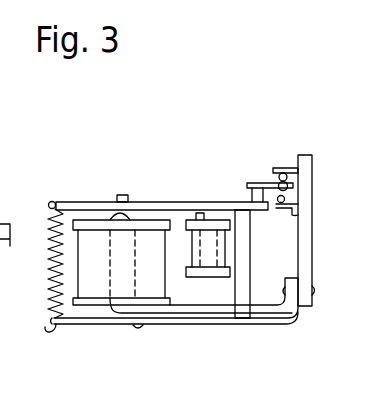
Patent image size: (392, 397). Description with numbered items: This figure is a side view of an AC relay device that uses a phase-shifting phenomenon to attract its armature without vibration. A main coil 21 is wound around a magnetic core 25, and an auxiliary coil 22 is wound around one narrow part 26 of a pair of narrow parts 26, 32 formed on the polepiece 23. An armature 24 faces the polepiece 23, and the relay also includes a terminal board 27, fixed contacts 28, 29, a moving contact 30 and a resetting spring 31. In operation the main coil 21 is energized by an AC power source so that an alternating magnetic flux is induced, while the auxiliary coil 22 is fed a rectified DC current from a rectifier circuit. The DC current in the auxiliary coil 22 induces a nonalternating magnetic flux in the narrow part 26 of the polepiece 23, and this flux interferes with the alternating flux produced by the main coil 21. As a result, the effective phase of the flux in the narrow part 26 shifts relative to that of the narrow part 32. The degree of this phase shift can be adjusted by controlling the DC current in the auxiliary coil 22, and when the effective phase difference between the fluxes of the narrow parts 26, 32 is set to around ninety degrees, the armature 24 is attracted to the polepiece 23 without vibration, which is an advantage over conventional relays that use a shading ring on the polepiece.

The main coil 21 is at (147, 288).
The auxiliary coil 22 is at (195, 263).
The polepiece 23 is at (240, 297).
The armature 24 is at (210, 203).
The magnetic core 25 is at (135, 210).
The narrow part 26 is at (200, 218).
The terminal board 27 is at (305, 187).
The fixed contact 28 is at (280, 172).
The fixed contact 29 is at (280, 203).
The moving contact 30 is at (280, 181).
The resetting spring 31 is at (46, 281).
The narrow part 32 is at (246, 228).